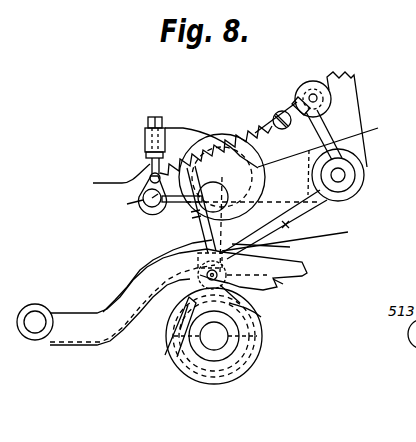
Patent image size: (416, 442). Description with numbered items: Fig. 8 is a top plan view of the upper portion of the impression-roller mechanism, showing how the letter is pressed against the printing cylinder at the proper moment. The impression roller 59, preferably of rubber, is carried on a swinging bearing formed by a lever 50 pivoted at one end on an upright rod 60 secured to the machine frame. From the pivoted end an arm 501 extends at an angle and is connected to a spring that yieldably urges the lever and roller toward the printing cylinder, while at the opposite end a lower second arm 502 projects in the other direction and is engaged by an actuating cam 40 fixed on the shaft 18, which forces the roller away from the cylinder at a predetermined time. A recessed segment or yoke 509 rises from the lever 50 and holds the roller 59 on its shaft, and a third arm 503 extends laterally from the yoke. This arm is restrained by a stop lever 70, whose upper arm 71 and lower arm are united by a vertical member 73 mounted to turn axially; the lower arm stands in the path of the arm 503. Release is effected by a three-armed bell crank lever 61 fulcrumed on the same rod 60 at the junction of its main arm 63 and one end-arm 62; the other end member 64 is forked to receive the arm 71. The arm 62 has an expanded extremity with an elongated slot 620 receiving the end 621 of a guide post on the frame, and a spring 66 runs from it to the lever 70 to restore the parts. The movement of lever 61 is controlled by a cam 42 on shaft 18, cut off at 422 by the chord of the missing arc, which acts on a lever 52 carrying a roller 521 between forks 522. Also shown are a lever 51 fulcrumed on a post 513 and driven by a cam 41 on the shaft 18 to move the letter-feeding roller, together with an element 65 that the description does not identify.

The shaft 18 is at (215, 336).
The actuating cam 40 is at (251, 299).
The cam 41 is at (182, 335).
The cam 42 is at (258, 358).
The cut-off chord 422 is at (180, 330).
The lever 50 is at (249, 203).
The arm 501 is at (332, 135).
The second arm 502 is at (300, 240).
The third arm 503 is at (166, 150).
The recessed segment or yoke 509 is at (226, 148).
The lever 51 is at (178, 297).
The post 513 is at (40, 312).
The lever 52 is at (280, 288).
The roller 521 is at (290, 247).
The forks 522 is at (261, 317).
The impression roller 59 is at (188, 165).
The upright rod 60 is at (356, 173).
The bell crank lever 61 is at (340, 204).
The end-arm 62 is at (327, 133).
The elongated slot 620 is at (294, 100).
The end of guide post 621 is at (312, 94).
The main arm 63 is at (287, 225).
The end member 64 is at (160, 257).
The pin 65 is at (213, 183).
The spring 66 is at (240, 133).
The lever 70 is at (153, 213).
The upper arm 71 is at (187, 205).
The vertical member 73 is at (126, 206).